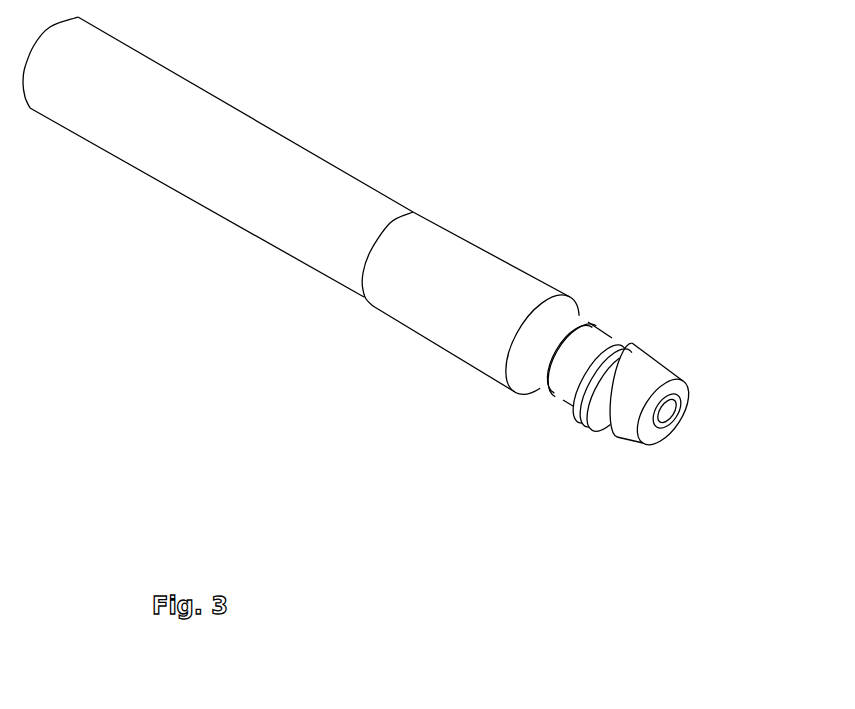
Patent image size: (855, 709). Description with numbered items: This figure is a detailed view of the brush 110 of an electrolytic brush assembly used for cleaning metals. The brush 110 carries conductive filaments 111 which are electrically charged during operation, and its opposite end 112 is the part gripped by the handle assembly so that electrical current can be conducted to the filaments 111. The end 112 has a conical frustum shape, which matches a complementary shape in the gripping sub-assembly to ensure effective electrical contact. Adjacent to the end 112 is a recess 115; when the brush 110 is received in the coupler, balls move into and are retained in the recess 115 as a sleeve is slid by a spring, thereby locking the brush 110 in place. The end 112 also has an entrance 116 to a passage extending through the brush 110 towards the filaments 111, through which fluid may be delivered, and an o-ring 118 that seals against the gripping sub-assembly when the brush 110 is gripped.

The brush 110 is at (404, 254).
The conductive filaments 111 is at (238, 199).
The end 112 is at (622, 412).
The recess 115 is at (565, 375).
The entrance 116 is at (663, 421).
The o-ring 118 is at (626, 350).